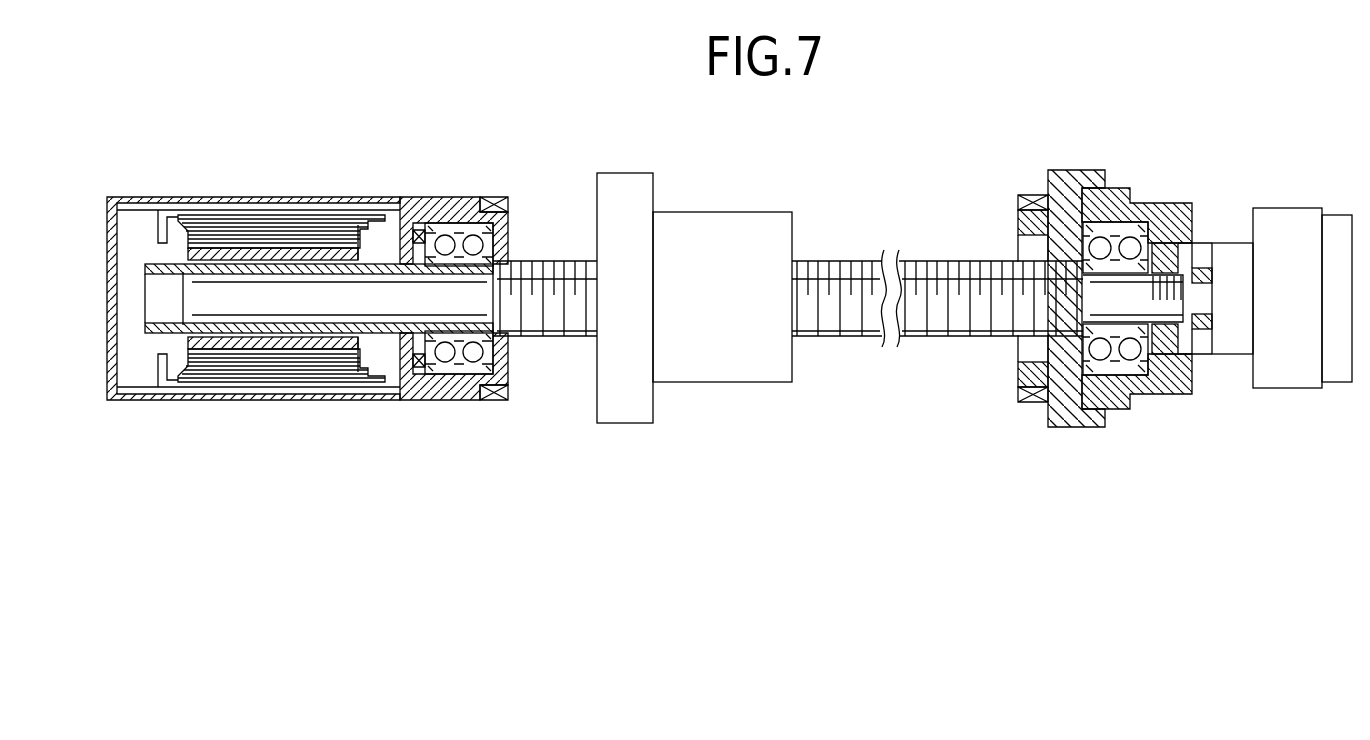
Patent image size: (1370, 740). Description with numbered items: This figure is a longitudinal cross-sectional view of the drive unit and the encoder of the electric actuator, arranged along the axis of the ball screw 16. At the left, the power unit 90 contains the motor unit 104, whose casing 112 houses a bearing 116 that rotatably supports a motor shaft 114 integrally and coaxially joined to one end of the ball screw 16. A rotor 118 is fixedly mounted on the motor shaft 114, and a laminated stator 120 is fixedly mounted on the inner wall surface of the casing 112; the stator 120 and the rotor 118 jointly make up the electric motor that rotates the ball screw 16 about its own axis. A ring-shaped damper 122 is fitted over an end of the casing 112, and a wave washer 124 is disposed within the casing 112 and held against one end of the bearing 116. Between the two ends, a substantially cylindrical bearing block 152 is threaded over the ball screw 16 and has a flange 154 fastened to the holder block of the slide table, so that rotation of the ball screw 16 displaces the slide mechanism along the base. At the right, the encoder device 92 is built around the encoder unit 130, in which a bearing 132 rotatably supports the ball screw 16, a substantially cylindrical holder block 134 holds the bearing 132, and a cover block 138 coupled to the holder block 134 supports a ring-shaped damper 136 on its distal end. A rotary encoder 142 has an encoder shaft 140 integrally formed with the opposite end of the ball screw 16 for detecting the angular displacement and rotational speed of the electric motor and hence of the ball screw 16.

The ball screw 16 is at (927, 341).
The power unit 90 is at (410, 166).
The encoder device 92 is at (1122, 146).
The motor unit 104 is at (283, 192).
The casing 112 is at (440, 389).
The motor shaft 114 is at (340, 306).
The bearing 116 is at (463, 368).
The rotor 118 is at (232, 342).
The laminated stator 120 is at (288, 368).
The ring-shaped damper 122 is at (509, 391).
The wave washer 124 is at (418, 369).
The encoder unit 130 is at (1153, 201).
The bearing 132 is at (1113, 373).
The holder block 134 is at (1168, 391).
The ring-shaped damper 136 is at (1020, 400).
The cover block 138 is at (1060, 426).
The encoder shaft 140 is at (1202, 352).
The rotary encoder 142 is at (1283, 222).
The bearing block 152 is at (720, 235).
The flange 154 is at (625, 192).